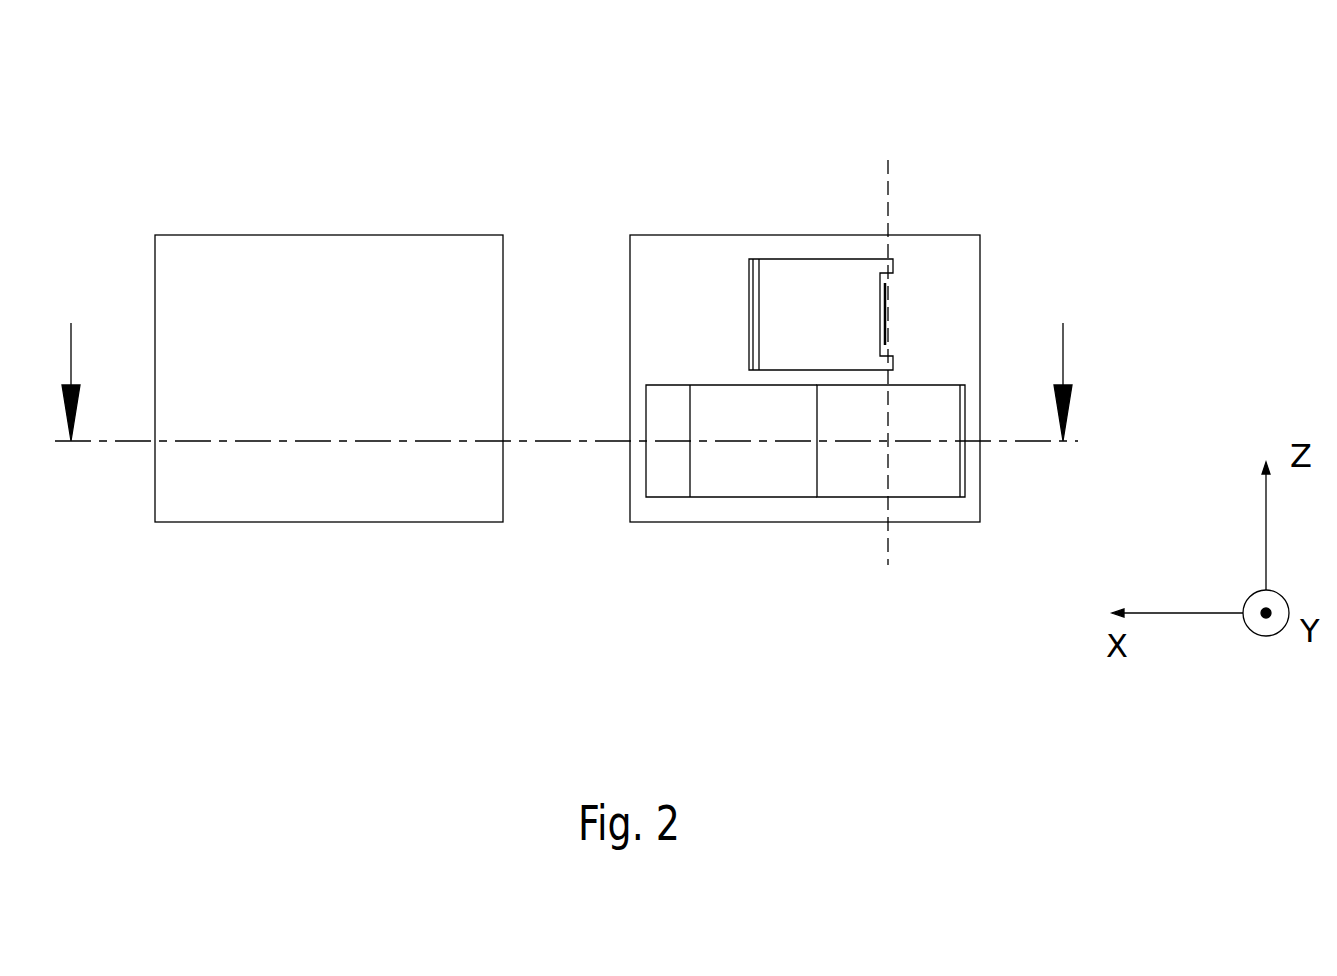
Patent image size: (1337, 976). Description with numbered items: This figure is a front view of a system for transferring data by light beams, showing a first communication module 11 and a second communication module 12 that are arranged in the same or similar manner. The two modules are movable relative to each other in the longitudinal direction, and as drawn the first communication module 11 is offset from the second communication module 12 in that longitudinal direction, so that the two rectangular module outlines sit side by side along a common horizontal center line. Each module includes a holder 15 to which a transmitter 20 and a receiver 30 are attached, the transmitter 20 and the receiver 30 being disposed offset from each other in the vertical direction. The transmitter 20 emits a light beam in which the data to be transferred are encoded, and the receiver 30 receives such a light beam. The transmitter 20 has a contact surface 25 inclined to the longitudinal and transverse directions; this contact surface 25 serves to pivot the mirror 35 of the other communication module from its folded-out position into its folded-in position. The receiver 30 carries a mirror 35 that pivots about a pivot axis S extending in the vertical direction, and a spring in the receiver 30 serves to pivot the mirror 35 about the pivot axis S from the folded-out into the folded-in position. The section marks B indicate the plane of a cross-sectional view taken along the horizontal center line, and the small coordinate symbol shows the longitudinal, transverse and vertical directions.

The first communication module 11 is at (690, 290).
The second communication module 12 is at (239, 290).
The holder 15 is at (403, 292).
The transmitter 20 is at (730, 477).
The contact surface 25 is at (855, 477).
The receiver 30 is at (791, 292).
The mirror 35 is at (833, 280).
The pivot axis S is at (890, 185).
The section B-B indicator B is at (566, 358).